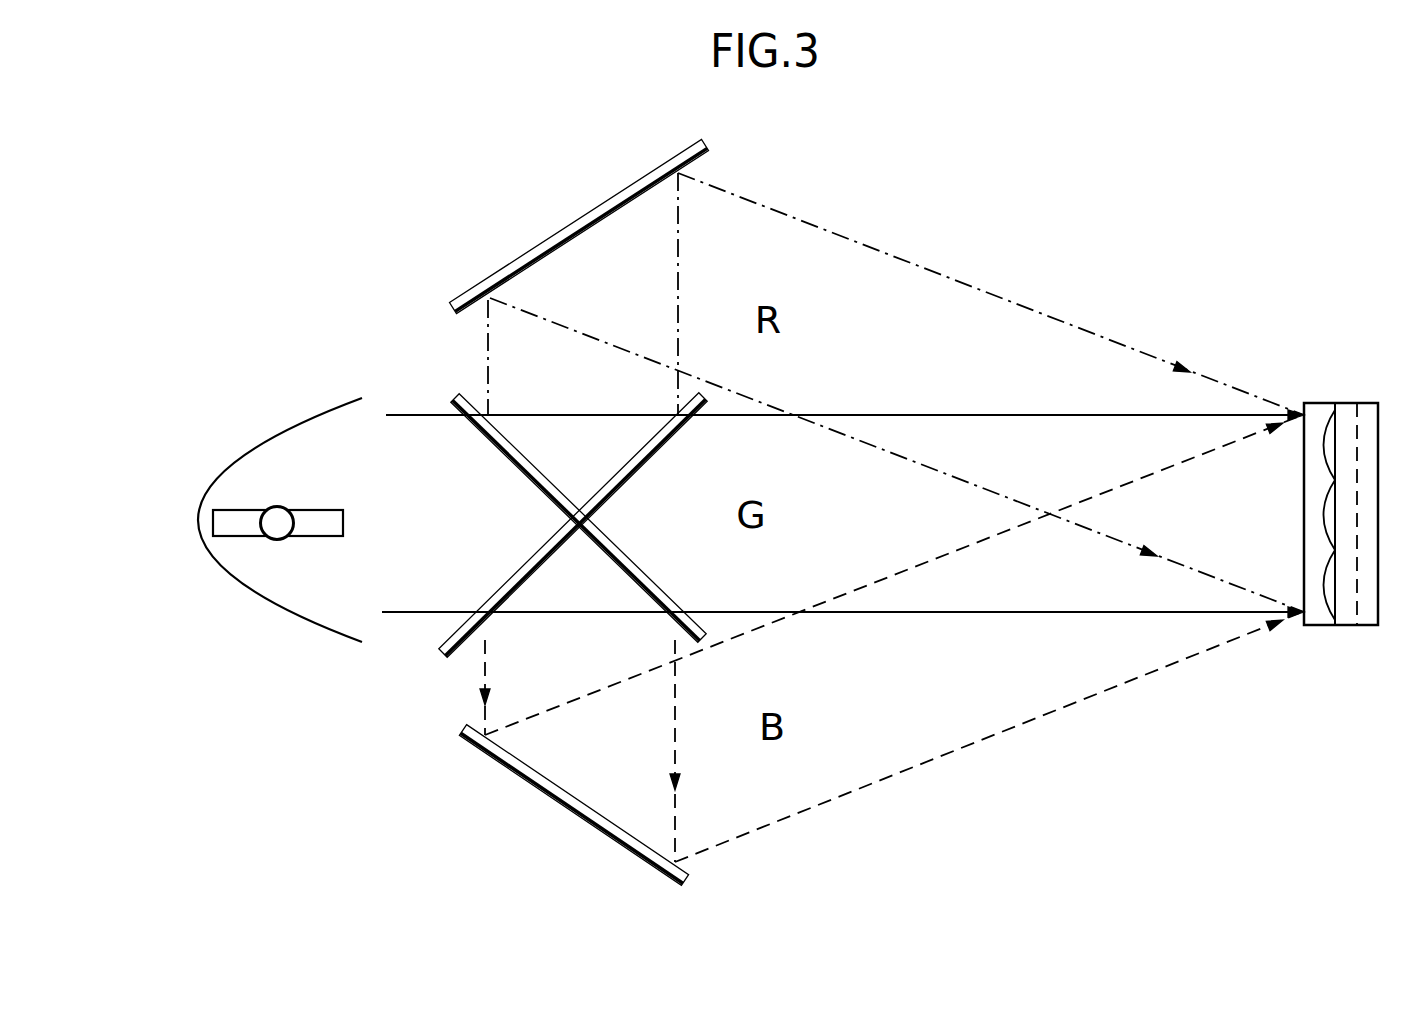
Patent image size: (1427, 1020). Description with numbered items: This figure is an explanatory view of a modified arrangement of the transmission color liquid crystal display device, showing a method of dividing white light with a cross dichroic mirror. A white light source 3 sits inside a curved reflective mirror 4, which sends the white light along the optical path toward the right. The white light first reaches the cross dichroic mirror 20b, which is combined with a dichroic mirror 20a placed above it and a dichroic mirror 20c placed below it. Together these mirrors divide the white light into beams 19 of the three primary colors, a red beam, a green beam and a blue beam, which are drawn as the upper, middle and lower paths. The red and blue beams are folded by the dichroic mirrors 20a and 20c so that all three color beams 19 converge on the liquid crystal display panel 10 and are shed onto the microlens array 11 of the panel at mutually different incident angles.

The white light source 3 is at (270, 542).
The reflective mirror 4 is at (277, 418).
The liquid crystal display panel 10 is at (1345, 393).
The microlens array 11 is at (1325, 413).
The beams of three primary colors 19 is at (1088, 330).
The dichroic mirror 20a is at (594, 210).
The cross dichroic mirror 20b is at (455, 632).
The dichroic mirror 20c is at (578, 820).